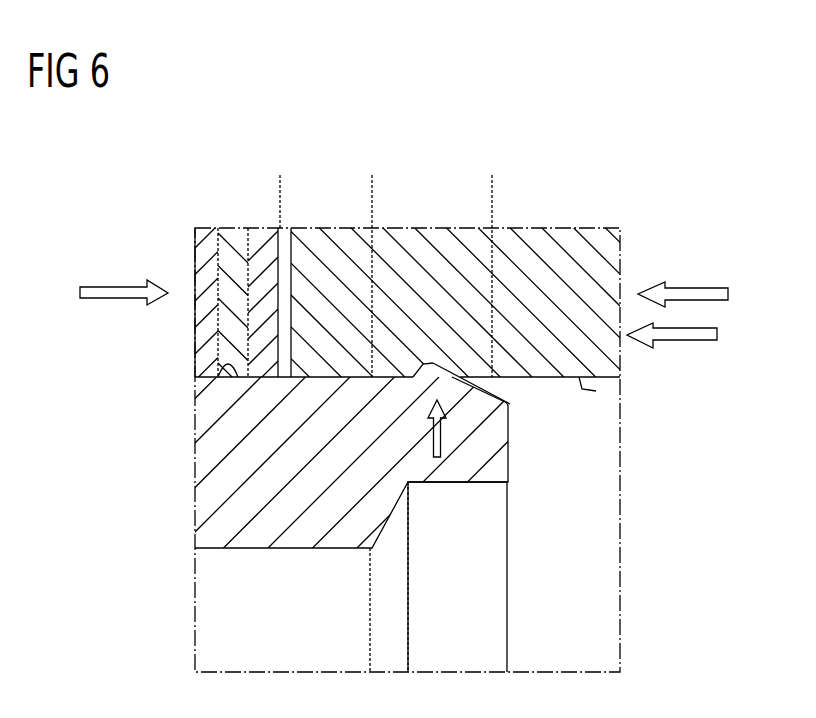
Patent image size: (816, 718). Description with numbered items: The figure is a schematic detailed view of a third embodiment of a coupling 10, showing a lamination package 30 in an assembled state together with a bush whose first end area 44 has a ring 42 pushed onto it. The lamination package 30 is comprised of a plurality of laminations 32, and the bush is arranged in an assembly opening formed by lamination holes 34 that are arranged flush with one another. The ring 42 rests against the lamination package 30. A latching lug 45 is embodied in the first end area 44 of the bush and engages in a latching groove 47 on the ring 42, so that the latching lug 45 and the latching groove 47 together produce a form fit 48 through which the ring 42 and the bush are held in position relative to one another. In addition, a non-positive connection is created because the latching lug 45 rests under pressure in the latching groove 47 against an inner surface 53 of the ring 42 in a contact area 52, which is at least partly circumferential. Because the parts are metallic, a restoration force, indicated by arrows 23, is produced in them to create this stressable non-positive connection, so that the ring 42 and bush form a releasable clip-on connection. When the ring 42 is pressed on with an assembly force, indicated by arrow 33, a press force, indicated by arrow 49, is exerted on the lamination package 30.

The coupling 10 is at (124, 585).
The arrows indicating restoration force 23 is at (444, 446).
The lamination package 30 is at (280, 188).
The laminations 32 is at (226, 323).
The arrow indicating assembly force 33 is at (703, 343).
The lamination holes 34 is at (218, 372).
The ring 42 is at (594, 240).
The first end area 44 is at (204, 460).
The latching lug 45 is at (456, 374).
The latching groove 47 is at (420, 370).
The form fit 48 is at (492, 188).
The arrow indicating press force 49 is at (115, 283).
The contact area 52 is at (512, 406).
The inner surface 53 is at (596, 391).